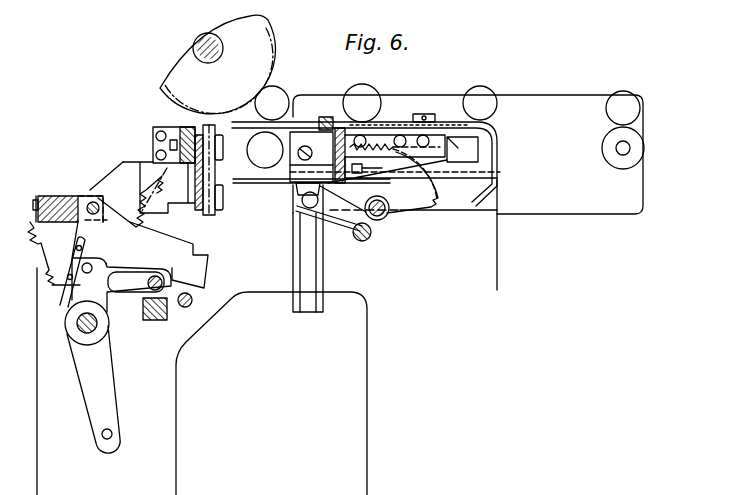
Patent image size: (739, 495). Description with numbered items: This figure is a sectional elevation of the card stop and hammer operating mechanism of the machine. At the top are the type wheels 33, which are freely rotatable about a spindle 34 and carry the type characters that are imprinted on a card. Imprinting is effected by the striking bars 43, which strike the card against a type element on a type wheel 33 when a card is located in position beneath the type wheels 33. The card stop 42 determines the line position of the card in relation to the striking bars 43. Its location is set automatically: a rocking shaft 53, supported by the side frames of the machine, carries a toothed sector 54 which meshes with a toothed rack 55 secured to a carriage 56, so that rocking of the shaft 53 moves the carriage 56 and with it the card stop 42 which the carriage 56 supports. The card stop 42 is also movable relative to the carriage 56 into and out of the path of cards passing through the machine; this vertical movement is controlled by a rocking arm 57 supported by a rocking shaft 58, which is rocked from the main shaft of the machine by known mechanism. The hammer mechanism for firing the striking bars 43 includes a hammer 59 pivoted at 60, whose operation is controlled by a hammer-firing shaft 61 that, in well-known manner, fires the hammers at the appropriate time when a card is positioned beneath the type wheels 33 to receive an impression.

The type wheels 33 is at (282, 36).
The spindle 34 is at (222, 56).
The card stop 42 is at (324, 117).
The striking bars 43 is at (215, 222).
The rocking shaft 53 is at (382, 220).
The toothed sector 54 is at (390, 147).
The toothed rack 55 is at (447, 130).
The carriage 56 is at (370, 135).
The rocking arm 57 is at (345, 227).
The rocking shaft 58 is at (372, 222).
The hammer 59 is at (210, 265).
The hammer pivot 60 is at (93, 201).
The hammer-firing shaft 61 is at (100, 325).